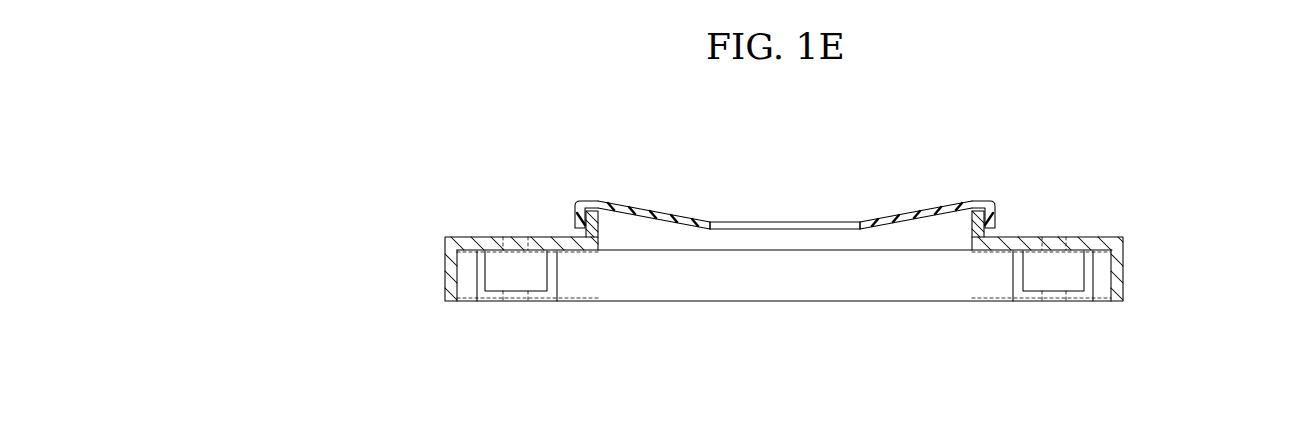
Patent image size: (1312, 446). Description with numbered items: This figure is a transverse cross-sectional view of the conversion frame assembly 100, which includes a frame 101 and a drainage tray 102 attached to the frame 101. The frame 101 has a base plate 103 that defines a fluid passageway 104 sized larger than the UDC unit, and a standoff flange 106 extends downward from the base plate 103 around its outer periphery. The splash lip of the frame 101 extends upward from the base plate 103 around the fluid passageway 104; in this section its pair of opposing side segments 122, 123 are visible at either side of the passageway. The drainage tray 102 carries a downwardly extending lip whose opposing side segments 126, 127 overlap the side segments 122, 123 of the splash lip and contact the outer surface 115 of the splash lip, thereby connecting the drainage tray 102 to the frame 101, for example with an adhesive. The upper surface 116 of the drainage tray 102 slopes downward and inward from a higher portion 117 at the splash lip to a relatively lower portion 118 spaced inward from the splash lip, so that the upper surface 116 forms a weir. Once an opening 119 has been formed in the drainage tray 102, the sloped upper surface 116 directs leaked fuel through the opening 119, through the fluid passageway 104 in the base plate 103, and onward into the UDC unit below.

The conversion frame assembly 100 is at (530, 120).
The frame 101 is at (1178, 130).
The drainage tray 102 is at (945, 118).
The base plate 103 is at (485, 237).
The fluid passageway 104 is at (930, 237).
The standoff flange 106 is at (447, 268).
The outer surface of the splash lip 115 is at (577, 229).
The upper surface of the drainage tray 116 is at (620, 204).
The higher portion 117 is at (786, 154).
The lower portion 118 is at (722, 196).
The opening 119 is at (783, 221).
The side segment of the splash lip 122 is at (600, 237).
The side segment of the splash lip 123 is at (970, 237).
The side segment of the downwardly extending lip 126 is at (575, 214).
The side segment of the downwardly extending lip 127 is at (995, 214).